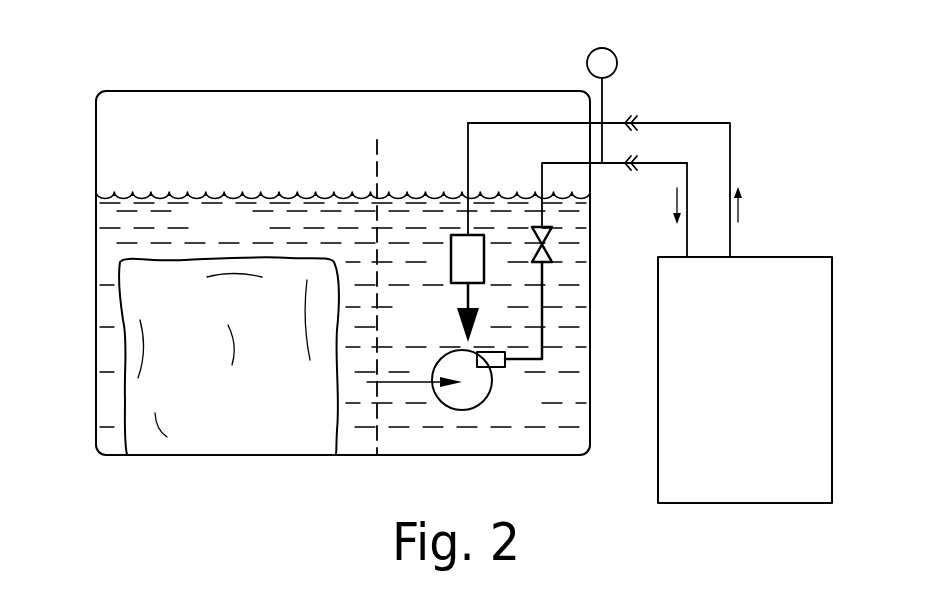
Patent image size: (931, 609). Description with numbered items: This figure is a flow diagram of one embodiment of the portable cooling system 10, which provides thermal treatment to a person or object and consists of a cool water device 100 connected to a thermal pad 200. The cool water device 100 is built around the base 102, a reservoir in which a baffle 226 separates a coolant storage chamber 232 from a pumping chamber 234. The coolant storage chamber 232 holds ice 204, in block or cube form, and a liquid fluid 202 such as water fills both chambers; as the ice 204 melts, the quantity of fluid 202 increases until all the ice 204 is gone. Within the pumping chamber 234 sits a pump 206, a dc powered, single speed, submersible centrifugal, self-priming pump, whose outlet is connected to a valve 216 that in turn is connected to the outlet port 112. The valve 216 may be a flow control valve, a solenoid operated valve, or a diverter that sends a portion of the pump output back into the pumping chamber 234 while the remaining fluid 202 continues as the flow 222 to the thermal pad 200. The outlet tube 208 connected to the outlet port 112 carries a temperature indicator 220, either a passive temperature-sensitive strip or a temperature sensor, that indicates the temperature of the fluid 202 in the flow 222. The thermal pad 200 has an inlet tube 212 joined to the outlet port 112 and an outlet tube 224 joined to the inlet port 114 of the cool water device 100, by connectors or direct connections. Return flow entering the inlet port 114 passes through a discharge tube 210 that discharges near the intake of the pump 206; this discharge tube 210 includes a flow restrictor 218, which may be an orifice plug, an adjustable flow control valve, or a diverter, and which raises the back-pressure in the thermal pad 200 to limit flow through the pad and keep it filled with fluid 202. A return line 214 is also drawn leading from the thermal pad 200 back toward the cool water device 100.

The portable cooling system 10 is at (78, 62).
The cool water device 100 is at (316, 58).
The base 102 is at (357, 456).
The outlet port 112 is at (630, 157).
The inlet port 114 is at (628, 116).
The thermal pad 200 is at (816, 293).
The liquid fluid 202 is at (118, 193).
The ice 204 is at (247, 406).
The pump 206 is at (466, 411).
The outlet tube 208 is at (545, 343).
The discharge tube 210 is at (467, 162).
The inlet tube 212 is at (688, 178).
The supply line to thermal pad 214 is at (718, 120).
The valve 216 is at (553, 235).
The flow restrictor 218 is at (450, 247).
The temperature indicator 220 is at (586, 63).
The flow to the thermal pad 222 is at (668, 214).
The outlet tube 224 is at (738, 218).
The baffle 226 is at (375, 177).
The coolant storage chamber 232 is at (243, 233).
The pumping chamber 234 is at (445, 325).